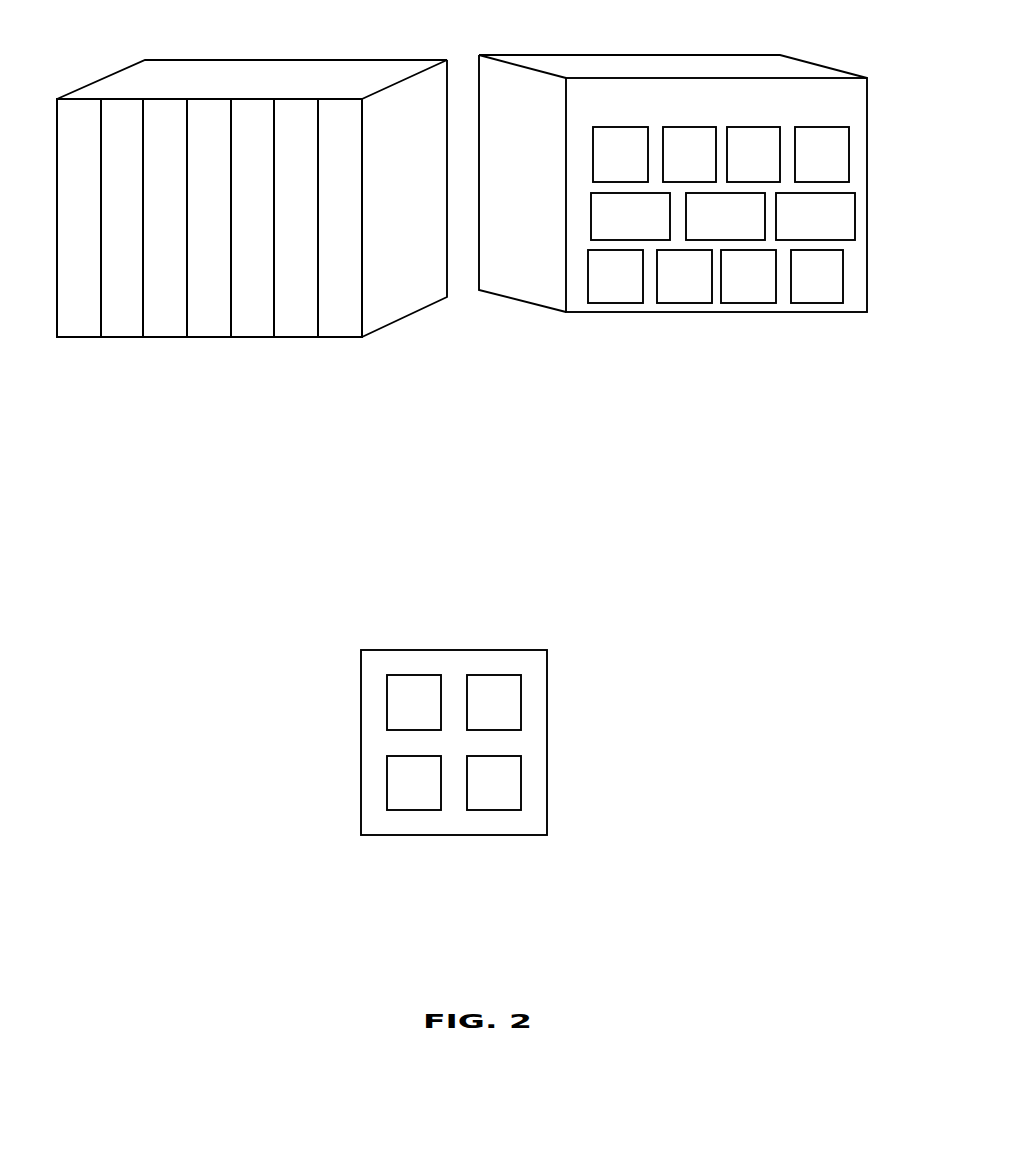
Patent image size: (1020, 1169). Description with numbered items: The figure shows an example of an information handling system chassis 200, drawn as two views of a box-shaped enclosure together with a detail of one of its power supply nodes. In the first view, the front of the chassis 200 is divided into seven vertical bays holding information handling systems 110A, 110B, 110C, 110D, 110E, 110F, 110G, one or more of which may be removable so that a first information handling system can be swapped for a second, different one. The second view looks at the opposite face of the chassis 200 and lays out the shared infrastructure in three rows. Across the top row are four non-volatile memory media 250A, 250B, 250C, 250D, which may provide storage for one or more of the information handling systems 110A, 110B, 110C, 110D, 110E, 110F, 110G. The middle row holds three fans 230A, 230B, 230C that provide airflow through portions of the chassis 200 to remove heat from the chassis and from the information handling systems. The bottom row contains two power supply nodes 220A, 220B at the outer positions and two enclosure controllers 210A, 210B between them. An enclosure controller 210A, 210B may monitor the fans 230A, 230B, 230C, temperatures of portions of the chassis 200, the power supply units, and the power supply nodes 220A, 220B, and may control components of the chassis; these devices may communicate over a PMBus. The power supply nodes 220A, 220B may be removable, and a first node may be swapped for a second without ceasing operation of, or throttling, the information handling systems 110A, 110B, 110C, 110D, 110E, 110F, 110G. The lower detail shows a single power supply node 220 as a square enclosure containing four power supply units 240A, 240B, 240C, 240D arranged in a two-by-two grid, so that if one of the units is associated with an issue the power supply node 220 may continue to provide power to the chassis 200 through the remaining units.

The information handling system chassis 200 is at (252, 60).
The information handling system 110A is at (79, 337).
The information handling system 110B is at (124, 337).
The information handling system 110C is at (170, 337).
The information handling system 110D is at (210, 337).
The information handling system 110E is at (258, 337).
The information handling system 110F is at (298, 337).
The information handling system 110G is at (343, 337).
The non-volatile memory medium 250A is at (621, 127).
The non-volatile memory medium 250B is at (673, 127).
The non-volatile memory medium 250C is at (753, 127).
The non-volatile memory medium 250D is at (820, 127).
The fan 230A is at (652, 226).
The fan 230B is at (747, 226).
The fan 230C is at (837, 226).
The power supply node 220A is at (617, 303).
The power supply node 220B is at (817, 303).
The enclosure controller 210A is at (688, 303).
The enclosure controller 210B is at (747, 303).
The power supply node 220 is at (453, 835).
The power supply unit 240A is at (387, 705).
The power supply unit 240B is at (521, 700).
The power supply unit 240C is at (521, 780).
The power supply unit 240D is at (387, 780).